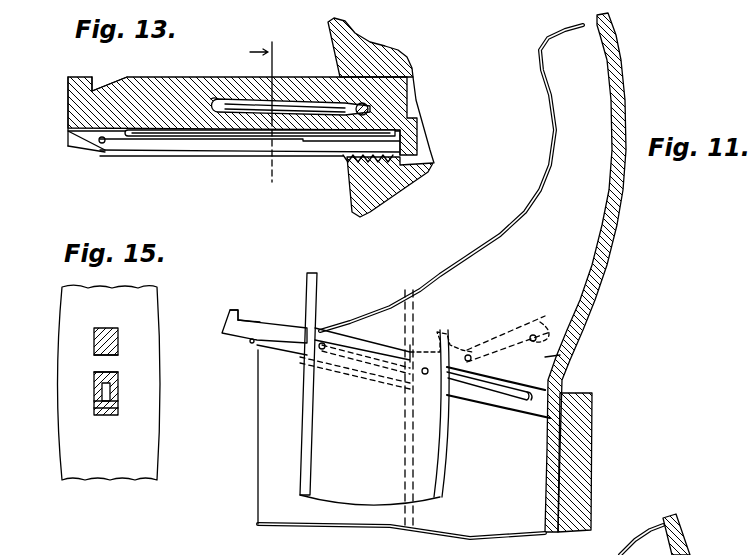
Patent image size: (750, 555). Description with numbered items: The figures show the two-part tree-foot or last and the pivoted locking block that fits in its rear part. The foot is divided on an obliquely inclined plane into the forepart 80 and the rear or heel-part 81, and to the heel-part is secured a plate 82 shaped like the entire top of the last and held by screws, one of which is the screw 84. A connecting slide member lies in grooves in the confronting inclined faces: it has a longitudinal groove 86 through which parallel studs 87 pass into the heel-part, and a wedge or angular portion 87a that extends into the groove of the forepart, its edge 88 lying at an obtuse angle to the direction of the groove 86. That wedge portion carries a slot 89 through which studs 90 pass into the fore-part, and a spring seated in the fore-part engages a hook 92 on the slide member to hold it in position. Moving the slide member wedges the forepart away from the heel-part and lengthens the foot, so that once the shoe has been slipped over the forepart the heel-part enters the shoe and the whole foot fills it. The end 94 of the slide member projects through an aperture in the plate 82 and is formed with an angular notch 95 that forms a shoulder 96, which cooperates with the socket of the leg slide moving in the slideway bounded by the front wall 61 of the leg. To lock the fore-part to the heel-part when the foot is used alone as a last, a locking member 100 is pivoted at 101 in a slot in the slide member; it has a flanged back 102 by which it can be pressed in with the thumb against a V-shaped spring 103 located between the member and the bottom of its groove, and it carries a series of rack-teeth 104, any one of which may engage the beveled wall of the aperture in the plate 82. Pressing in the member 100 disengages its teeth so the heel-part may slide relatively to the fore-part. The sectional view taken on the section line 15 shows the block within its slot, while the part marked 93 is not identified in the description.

In FIG. 13, the section line of Fig. 15 is at (268, 111).
In FIG. 15, the front wall 61 is at (160, 447).
In FIG. 11, the forepart 80 is at (590, 201).
In FIG. 11, the heel-part 81 is at (332, 412).
In FIG. 11, the plate 82 is at (301, 458).
In FIG. 11, the screw 84 is at (446, 468).
In FIG. 13, the longitudinal groove 86 is at (238, 108).
In FIG. 11, the longitudinal groove 86 is at (537, 401).
In FIG. 13, the studs 87 is at (366, 106).
In FIG. 11, the wedge portion 87a is at (545, 357).
In FIG. 11, the edge 88 is at (508, 331).
In FIG. 11, the slot 89 is at (500, 348).
In FIG. 11, the studs 90 is at (532, 342).
In FIG. 11, the hook 92 is at (450, 334).
In FIG. 13, the locking rod 93 is at (300, 106).
In FIG. 11, the locking rod 93 is at (483, 387).
In FIG. 13, the end of the slide member 94 is at (178, 92).
In FIG. 15, the end of the slide member 94 is at (120, 378).
In FIG. 11, the end of the slide member 94 is at (280, 324).
In FIG. 13, the angular notch 95 is at (120, 84).
In FIG. 11, the angular notch 95 is at (250, 319).
In FIG. 13, the shoulder 96 is at (93, 80).
In FIG. 11, the shoulder 96 is at (238, 314).
In FIG. 13, the locking member 100 is at (178, 137).
In FIG. 15, the locking member 100 is at (118, 405).
In FIG. 13, the pivot 101 is at (102, 144).
In FIG. 13, the flanged back 102 is at (215, 153).
In FIG. 15, the flanged back 102 is at (95, 409).
In FIG. 13, the V-shaped spring 103 is at (348, 158).
In FIG. 13, the rack-teeth 104 is at (358, 162).